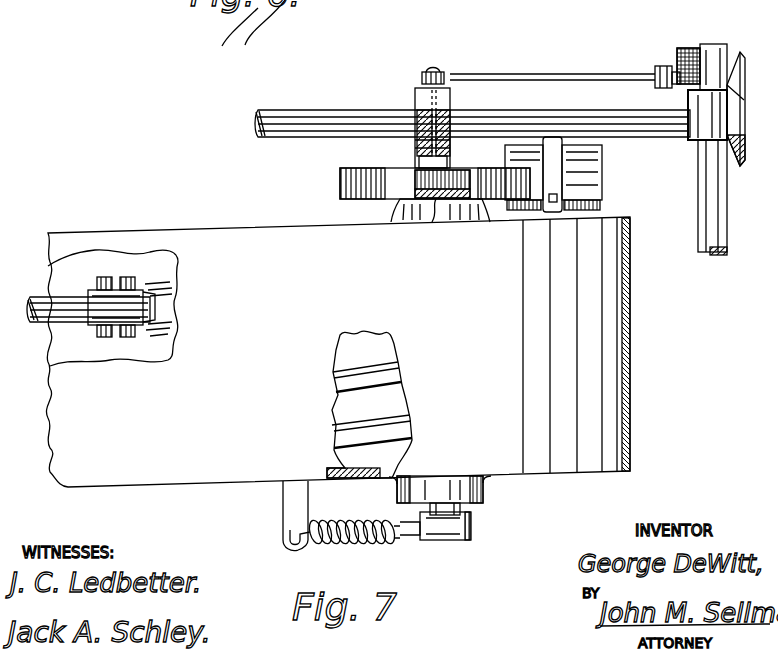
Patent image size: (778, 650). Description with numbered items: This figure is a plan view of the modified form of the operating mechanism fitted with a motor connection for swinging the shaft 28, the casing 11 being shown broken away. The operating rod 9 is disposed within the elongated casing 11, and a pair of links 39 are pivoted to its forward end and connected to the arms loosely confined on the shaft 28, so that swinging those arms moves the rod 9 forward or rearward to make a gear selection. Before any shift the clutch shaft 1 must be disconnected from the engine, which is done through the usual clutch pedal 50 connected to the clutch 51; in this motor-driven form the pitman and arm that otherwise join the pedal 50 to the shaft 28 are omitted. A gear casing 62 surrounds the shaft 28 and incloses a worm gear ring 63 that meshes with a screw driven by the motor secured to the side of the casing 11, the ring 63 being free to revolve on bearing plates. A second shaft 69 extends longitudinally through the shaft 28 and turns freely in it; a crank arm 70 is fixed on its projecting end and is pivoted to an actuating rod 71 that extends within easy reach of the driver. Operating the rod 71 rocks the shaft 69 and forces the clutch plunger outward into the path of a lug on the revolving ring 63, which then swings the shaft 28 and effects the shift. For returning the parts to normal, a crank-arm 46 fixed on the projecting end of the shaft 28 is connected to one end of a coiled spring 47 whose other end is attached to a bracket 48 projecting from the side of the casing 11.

The clutch shaft 1 is at (316, 114).
The operating rod 9 is at (60, 313).
The casing 11 is at (655, 322).
The shaft 28 is at (418, 150).
The links 39 is at (165, 282).
The crank-arm 46 is at (480, 522).
The coiled spring 47 is at (350, 520).
The bracket 48 is at (283, 514).
The clutch pedal 50 is at (604, 180).
The clutch 51 is at (745, 102).
The gear casing 62 is at (343, 168).
The worm gear ring 63 is at (440, 227).
The shaft 69 is at (452, 150).
The crank arm 70 is at (433, 72).
The actuating rod 71 is at (536, 76).